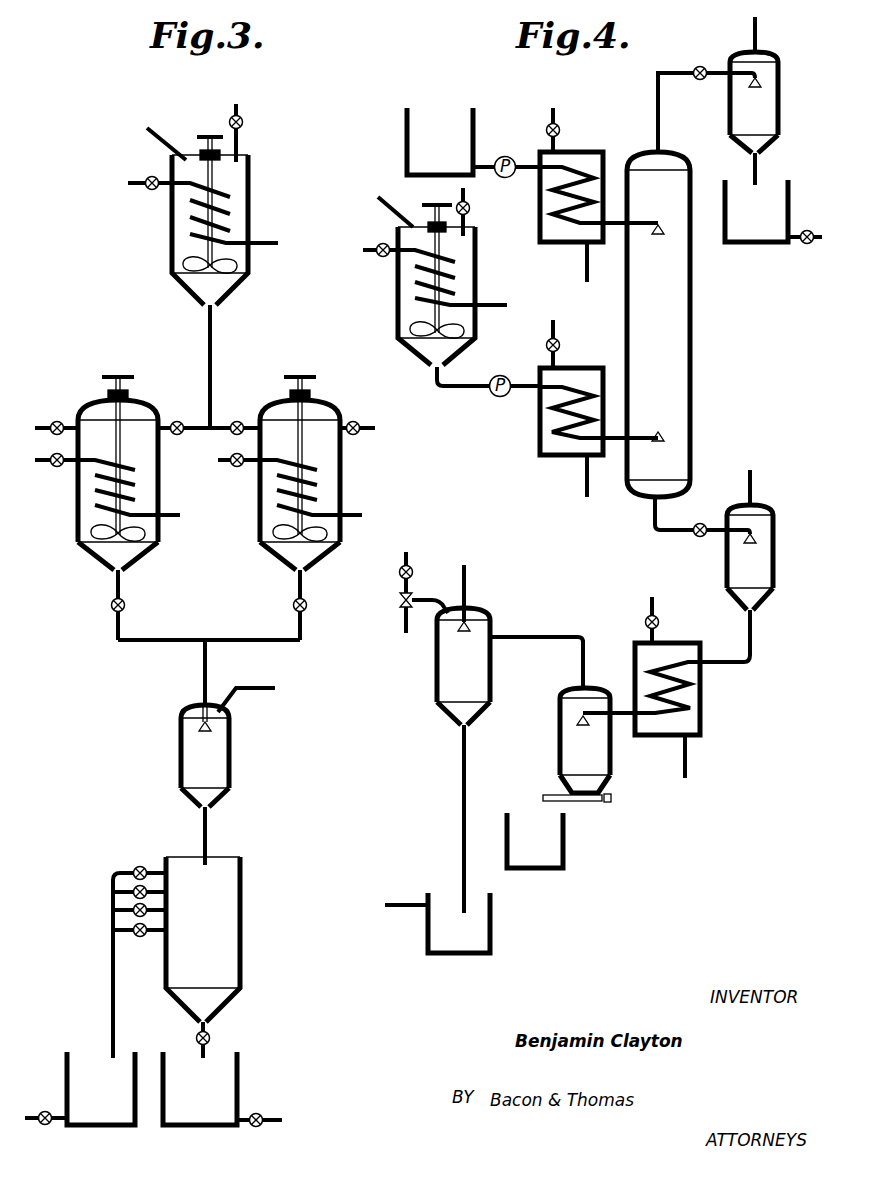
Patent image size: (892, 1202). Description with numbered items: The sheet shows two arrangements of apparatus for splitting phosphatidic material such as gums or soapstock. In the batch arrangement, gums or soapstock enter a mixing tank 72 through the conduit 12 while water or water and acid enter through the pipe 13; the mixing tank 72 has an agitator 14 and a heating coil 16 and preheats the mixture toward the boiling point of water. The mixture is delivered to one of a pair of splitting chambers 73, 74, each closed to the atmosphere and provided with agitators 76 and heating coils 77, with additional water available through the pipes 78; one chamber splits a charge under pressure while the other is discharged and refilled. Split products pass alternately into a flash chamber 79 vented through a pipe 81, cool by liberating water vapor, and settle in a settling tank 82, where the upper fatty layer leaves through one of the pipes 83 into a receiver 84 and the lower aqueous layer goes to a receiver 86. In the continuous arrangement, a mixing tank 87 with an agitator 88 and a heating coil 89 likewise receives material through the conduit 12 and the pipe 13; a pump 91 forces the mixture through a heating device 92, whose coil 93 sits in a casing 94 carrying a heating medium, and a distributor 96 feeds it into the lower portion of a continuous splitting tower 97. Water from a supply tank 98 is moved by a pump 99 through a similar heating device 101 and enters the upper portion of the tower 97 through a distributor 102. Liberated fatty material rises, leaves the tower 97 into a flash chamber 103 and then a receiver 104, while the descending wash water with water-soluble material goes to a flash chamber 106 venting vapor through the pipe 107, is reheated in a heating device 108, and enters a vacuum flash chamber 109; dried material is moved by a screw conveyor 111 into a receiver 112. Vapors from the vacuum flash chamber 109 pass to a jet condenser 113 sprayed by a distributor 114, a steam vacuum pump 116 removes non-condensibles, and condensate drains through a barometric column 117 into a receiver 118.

In FIG. 3, the conduit 12 is at (165, 134).
In FIG. 3, the pipe 13 is at (242, 118).
In FIG. 3, the agitator 14 is at (212, 178).
In FIG. 3, the heating coil 16 is at (190, 228).
In FIG. 3, the mixing tank 72 is at (250, 208).
In FIG. 3, the splitting chamber 73 is at (150, 405).
In FIG. 3, the splitting chamber 74 is at (333, 405).
In FIG. 3, the agitator 76 is at (128, 540).
In FIG. 3, the heating coil 77 is at (138, 480).
In FIG. 3, the pipe 78 is at (378, 410).
In FIG. 3, the flash chamber 79 is at (231, 752).
In FIG. 3, the pipe 81 is at (258, 692).
In FIG. 3, the settling tank 82 is at (240, 867).
In FIG. 3, the pipes 83 is at (125, 915).
In FIG. 3, the receiver 84 is at (65, 1070).
In FIG. 3, the receiver 86 is at (237, 1065).
In FIG. 4, the mixing tank 87 is at (475, 254).
In FIG. 4, the agitator 88 is at (400, 312).
In FIG. 4, the heating coil 89 is at (458, 290).
In FIG. 4, the pump 91 is at (497, 398).
In FIG. 4, the heating device 92 is at (575, 362).
In FIG. 4, the coil 93 is at (715, 722).
In FIG. 4, the casing 94 is at (642, 755).
In FIG. 4, the distributor 96 is at (665, 438).
In FIG. 4, the continuous splitting tower 97 is at (690, 328).
In FIG. 4, the supply tank 98 is at (473, 120).
In FIG. 4, the pump 99 is at (510, 155).
In FIG. 4, the heating device 101 is at (575, 145).
In FIG. 4, the distributor 102 is at (662, 235).
In FIG. 4, the flash chamber 103 is at (778, 85).
In FIG. 4, the receiver 104 is at (780, 180).
In FIG. 4, the flash chamber 106 is at (773, 565).
In FIG. 4, the pipe 107 is at (753, 492).
In FIG. 4, the heating device 108 is at (702, 690).
In FIG. 4, the vacuum flash chamber 109 is at (560, 745).
In FIG. 4, the screw conveyor 111 is at (590, 801).
In FIG. 4, the receiver 112 is at (563, 852).
In FIG. 4, the jet condenser 113 is at (490, 622).
In FIG. 4, the distributor 114 is at (460, 632).
In FIG. 4, the steam vacuum pump 116 is at (398, 600).
In FIG. 4, the barometric column 117 is at (462, 803).
In FIG. 4, the receiver 118 is at (490, 928).